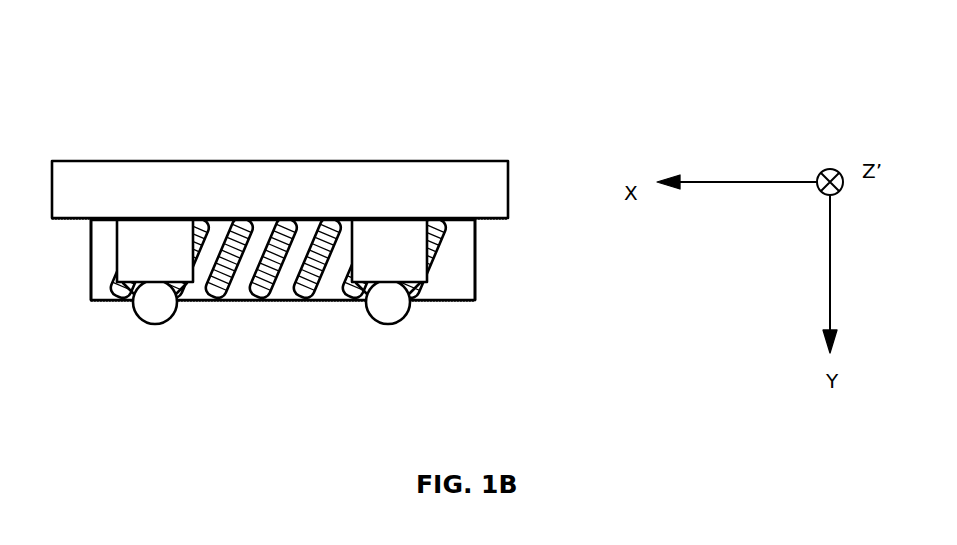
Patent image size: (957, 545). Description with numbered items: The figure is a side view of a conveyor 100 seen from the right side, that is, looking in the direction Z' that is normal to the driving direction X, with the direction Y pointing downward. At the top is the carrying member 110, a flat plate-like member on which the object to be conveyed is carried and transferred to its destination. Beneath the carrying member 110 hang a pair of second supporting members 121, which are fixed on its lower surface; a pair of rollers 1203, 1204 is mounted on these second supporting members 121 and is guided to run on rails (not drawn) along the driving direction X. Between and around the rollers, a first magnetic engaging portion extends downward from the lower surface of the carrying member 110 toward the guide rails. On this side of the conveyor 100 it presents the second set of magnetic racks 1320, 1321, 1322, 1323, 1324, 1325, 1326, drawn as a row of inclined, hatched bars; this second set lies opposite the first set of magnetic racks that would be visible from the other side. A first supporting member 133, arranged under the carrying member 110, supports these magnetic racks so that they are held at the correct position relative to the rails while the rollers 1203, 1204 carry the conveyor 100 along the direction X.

The conveyor 100 is at (149, 84).
The carrying member 110 is at (407, 160).
The second supporting member 121 is at (117, 249).
The first supporting member 133 is at (430, 263).
The roller 1203 is at (154, 324).
The roller 1204 is at (408, 316).
The magnetic rack 1320 is at (433, 300).
The magnetic rack 1321 is at (360, 312).
The magnetic rack 1322 is at (328, 300).
The magnetic rack 1323 is at (268, 297).
The magnetic rack 1324 is at (224, 297).
The magnetic rack 1325 is at (181, 297).
The magnetic rack 1326 is at (130, 296).